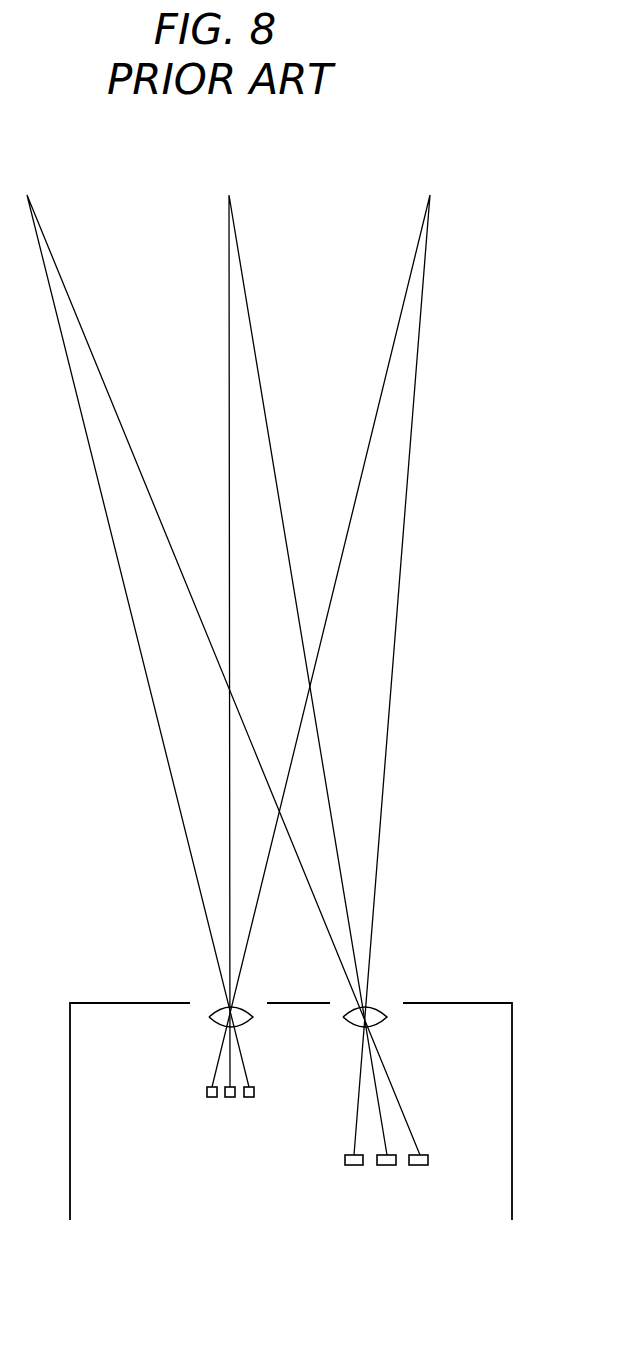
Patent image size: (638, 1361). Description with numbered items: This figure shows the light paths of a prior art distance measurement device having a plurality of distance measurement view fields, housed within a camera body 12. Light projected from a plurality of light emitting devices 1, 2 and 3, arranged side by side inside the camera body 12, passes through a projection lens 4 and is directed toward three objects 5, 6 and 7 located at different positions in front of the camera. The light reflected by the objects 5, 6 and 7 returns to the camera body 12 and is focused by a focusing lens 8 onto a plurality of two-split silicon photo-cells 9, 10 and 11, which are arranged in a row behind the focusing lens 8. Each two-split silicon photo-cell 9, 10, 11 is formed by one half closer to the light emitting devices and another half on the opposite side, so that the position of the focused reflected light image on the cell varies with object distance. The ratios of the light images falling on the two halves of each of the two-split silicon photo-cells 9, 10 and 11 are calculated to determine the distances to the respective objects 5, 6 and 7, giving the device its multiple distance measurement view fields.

The light emitting device 1 is at (211, 1098).
The light emitting device 2 is at (230, 1098).
The light emitting device 3 is at (250, 1098).
The projection lens 4 is at (212, 1019).
The object 5 is at (326, 659).
The object 6 is at (304, 659).
The object 7 is at (217, 659).
The focusing lens 8 is at (387, 1020).
The two-split silicon photo-cell 9 is at (353, 1165).
The two-split silicon photo-cell 10 is at (386, 1165).
The two-split silicon photo-cell 11 is at (420, 1165).
The camera body 12 is at (512, 1050).